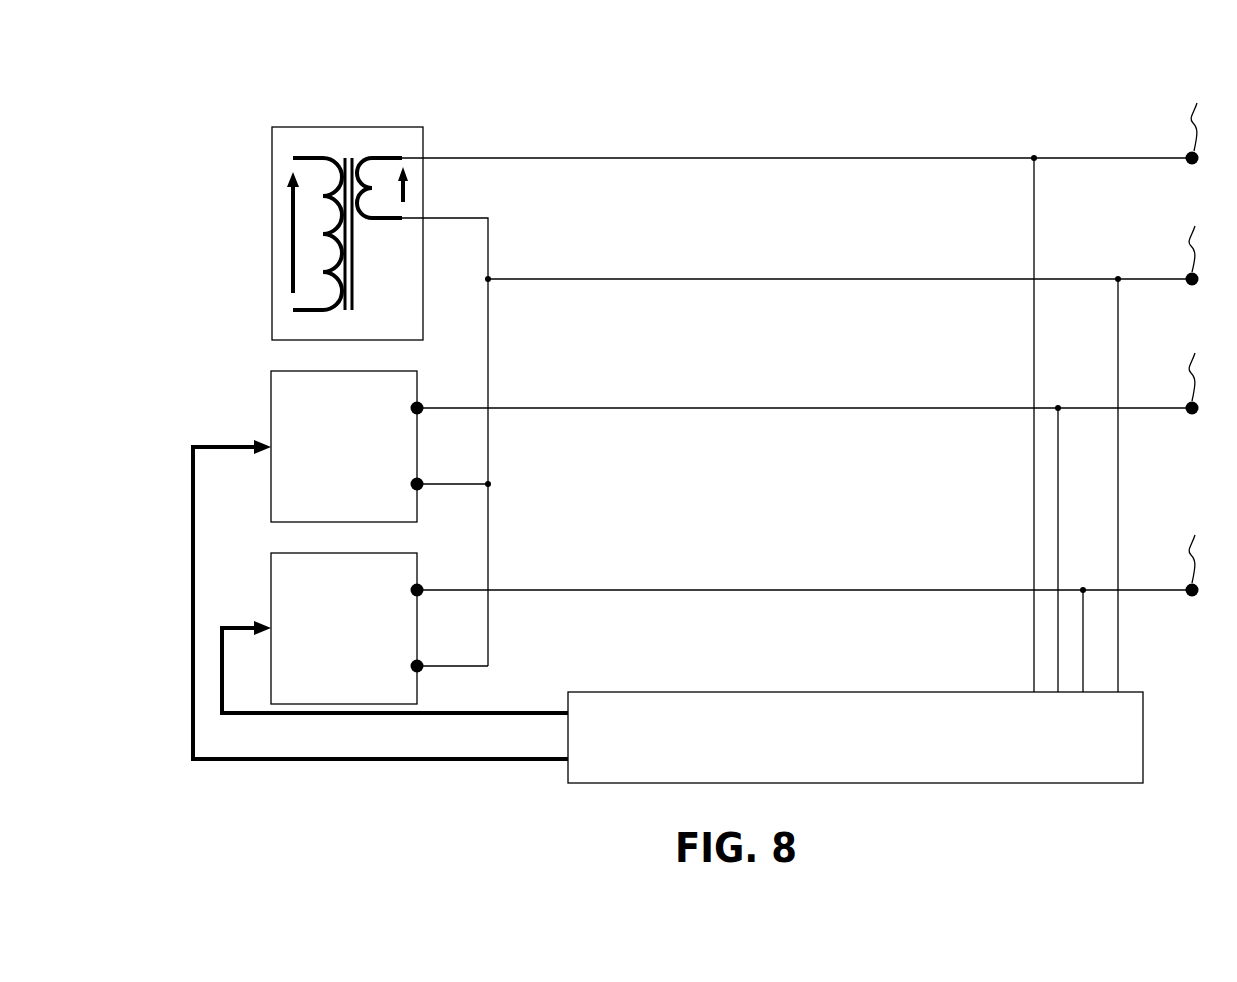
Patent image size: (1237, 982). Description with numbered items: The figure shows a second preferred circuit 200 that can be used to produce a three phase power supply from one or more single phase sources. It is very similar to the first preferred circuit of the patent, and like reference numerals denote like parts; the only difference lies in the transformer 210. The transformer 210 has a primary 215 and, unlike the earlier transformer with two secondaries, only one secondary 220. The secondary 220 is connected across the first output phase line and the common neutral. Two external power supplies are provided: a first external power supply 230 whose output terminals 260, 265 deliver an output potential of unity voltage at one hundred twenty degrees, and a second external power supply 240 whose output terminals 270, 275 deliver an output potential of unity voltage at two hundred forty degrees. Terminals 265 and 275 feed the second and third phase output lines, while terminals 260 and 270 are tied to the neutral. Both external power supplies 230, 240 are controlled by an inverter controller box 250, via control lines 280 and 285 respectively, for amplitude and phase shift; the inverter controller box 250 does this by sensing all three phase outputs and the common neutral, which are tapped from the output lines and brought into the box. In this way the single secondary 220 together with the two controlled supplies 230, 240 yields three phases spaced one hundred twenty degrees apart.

The second preferred circuit 200 is at (745, 124).
The transformer 210 is at (346, 125).
The primary 215 is at (323, 218).
The secondary 220 is at (372, 198).
The first external power supply 230 is at (270, 372).
The second external power supply 240 is at (270, 554).
The inverter controller box 250 is at (872, 692).
The terminal of first external power supply 260 is at (420, 480).
The terminal of first external power supply 265 is at (420, 404).
The terminal of second external power supply 270 is at (420, 662).
The terminal of second external power supply 275 is at (420, 586).
The control line 280 is at (223, 440).
The control line 285 is at (239, 622).